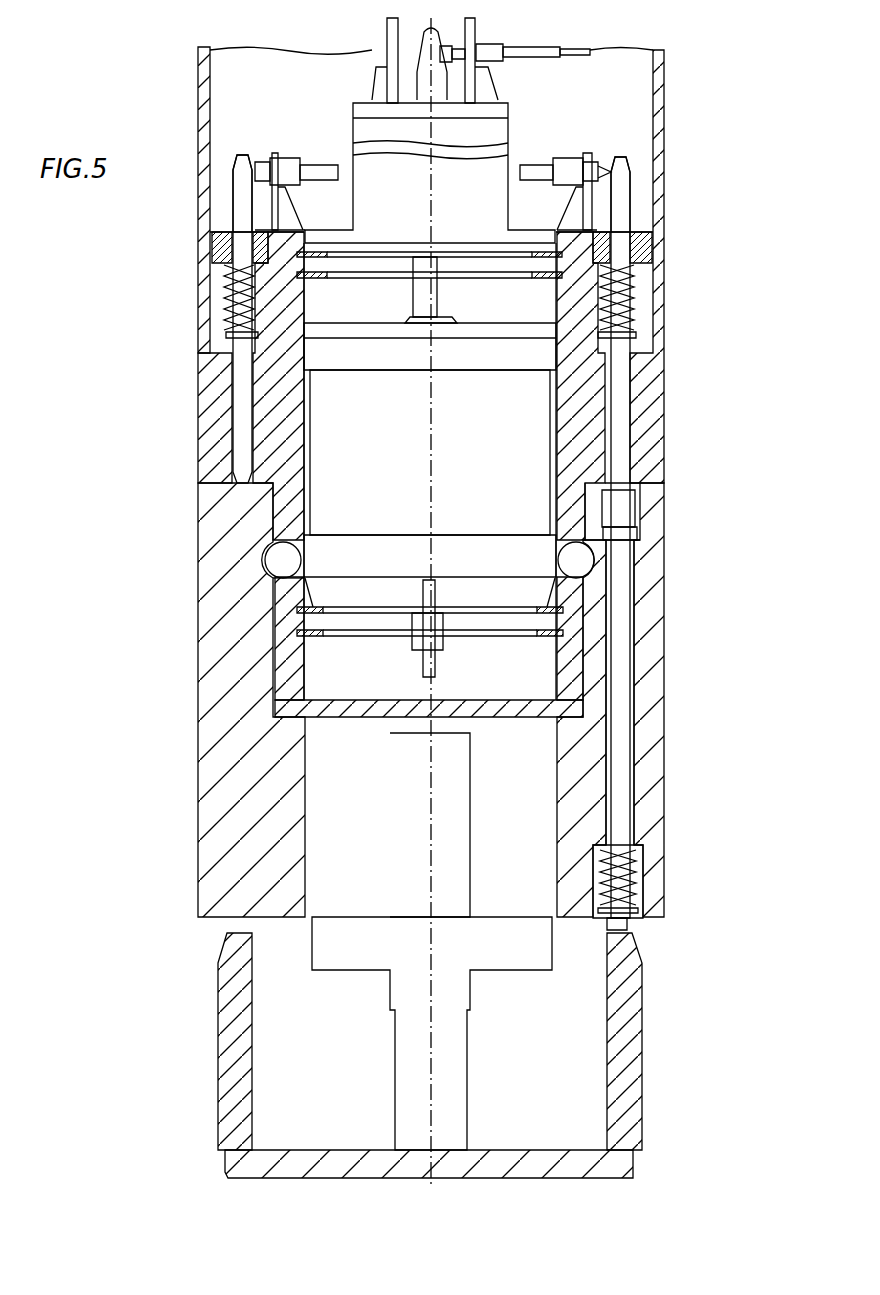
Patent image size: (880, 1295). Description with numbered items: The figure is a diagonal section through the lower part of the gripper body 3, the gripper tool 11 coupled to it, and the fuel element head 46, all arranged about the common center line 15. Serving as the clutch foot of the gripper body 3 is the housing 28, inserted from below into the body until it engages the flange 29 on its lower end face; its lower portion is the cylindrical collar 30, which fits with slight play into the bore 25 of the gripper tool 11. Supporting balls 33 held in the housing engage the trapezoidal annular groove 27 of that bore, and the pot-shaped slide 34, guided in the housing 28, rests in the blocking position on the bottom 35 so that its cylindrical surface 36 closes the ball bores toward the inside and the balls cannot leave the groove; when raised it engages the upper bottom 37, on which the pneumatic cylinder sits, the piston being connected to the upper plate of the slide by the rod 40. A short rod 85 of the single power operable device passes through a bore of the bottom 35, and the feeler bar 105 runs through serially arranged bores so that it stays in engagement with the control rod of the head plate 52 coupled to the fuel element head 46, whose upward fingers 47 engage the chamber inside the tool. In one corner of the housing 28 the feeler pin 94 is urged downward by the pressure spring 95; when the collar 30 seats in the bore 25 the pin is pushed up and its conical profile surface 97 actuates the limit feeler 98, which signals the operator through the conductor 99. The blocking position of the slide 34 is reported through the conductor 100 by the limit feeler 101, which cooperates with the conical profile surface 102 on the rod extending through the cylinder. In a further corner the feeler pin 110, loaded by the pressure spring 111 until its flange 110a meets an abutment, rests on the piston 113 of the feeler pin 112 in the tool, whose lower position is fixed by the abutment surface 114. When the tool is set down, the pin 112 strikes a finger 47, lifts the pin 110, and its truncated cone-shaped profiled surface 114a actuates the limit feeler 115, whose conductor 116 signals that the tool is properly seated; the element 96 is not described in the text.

The gripper body 3 is at (660, 136).
The gripper tool 11 is at (200, 685).
The center line 15 is at (437, 406).
The bore 25 is at (288, 693).
The annular groove 27 is at (264, 562).
The housing 28 is at (290, 420).
The flange 29 is at (198, 478).
The cylindrical collar 30 is at (290, 657).
The supporting balls 33 is at (275, 576).
The slide 34 is at (510, 492).
The bottom 35 is at (520, 628).
The cylindrical surface 36 is at (373, 545).
The upper bottom 37 is at (530, 265).
The rod 40 is at (437, 298).
The fuel element head 46 is at (635, 1165).
The fingers 47 is at (640, 1000).
The head plate 52 is at (335, 960).
The short rod 85 is at (440, 640).
The feeler pin 94 is at (243, 457).
The pressure spring 95 is at (258, 318).
The bushing 96 is at (295, 388).
The conical profile surface 97 is at (238, 160).
The limit feeler 98 is at (264, 158).
The conductor 99 is at (318, 164).
The conductor 100 is at (541, 58).
The limit feeler 101 is at (487, 46).
The conical profile surface 102 is at (423, 65).
The feeler bar 105 is at (435, 678).
The feeler pin 110 is at (620, 405).
The flange 110a is at (632, 338).
The pressure spring 111 is at (634, 306).
The feeler pin 112 is at (625, 695).
The piston 113 is at (630, 507).
The abutment surface 114 is at (638, 532).
The truncated cone-shaped profiled surface 114a is at (623, 157).
The limit feeler 115 is at (588, 157).
The tube 116 is at (534, 181).